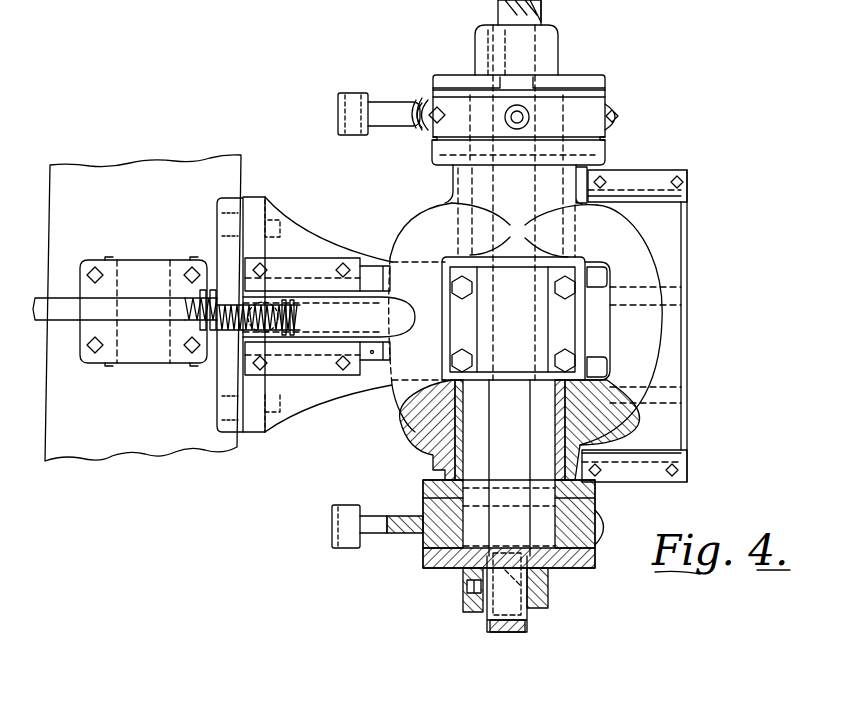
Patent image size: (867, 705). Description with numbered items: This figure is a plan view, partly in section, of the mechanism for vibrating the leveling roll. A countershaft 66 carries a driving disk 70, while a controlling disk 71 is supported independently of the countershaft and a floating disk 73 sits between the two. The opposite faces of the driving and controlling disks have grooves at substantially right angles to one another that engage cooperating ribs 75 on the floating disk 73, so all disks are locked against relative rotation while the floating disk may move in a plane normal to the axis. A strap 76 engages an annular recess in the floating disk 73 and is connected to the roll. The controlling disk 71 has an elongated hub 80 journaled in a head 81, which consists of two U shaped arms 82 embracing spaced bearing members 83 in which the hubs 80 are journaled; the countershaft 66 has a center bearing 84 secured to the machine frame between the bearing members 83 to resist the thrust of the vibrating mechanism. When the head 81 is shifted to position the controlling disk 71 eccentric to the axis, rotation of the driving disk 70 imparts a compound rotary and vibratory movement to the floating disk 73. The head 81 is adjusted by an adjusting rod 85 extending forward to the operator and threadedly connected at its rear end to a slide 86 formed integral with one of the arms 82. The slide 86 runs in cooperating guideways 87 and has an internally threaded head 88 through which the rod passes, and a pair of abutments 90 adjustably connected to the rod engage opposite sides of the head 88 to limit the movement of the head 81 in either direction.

The countershaft 66 is at (518, 623).
The driving disk 70 is at (592, 84).
The controlling disk 71 is at (606, 158).
The floating disk 73 is at (607, 100).
The ribs 75 is at (520, 83).
The strap 76 is at (394, 112).
The elongated hub 80 is at (557, 427).
The head 81 is at (652, 335).
The U shaped arms 82 is at (418, 227).
The bearing members 83 is at (597, 192).
The center bearing 84 is at (545, 315).
The adjusting rod 85 is at (205, 298).
The slide 86 is at (372, 354).
The guideways 87 is at (315, 270).
The internally threaded head 88 is at (275, 305).
The abutments 90 is at (300, 327).